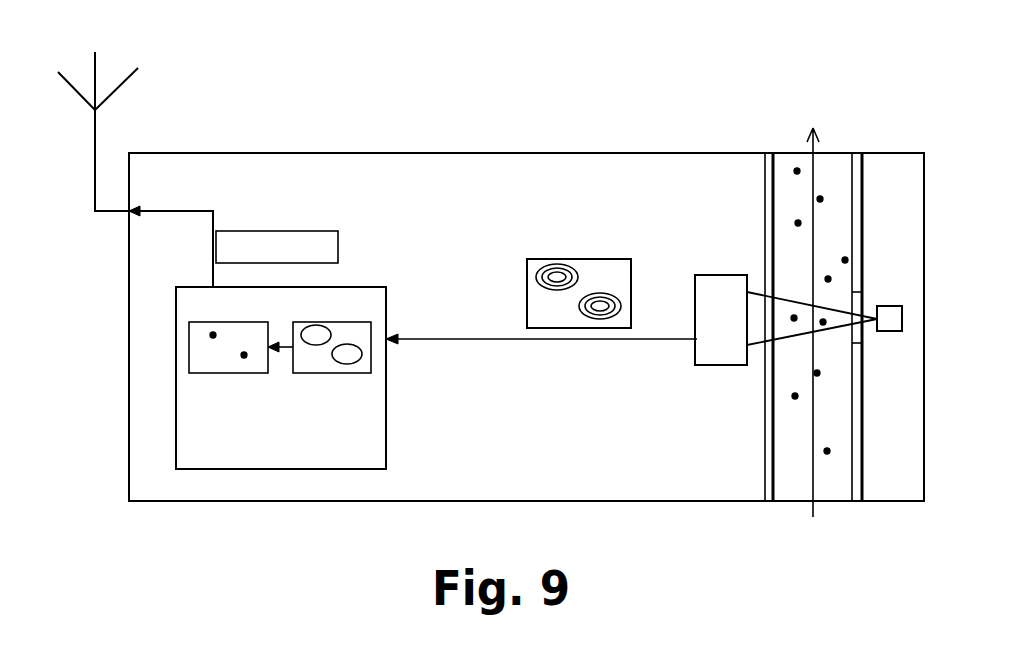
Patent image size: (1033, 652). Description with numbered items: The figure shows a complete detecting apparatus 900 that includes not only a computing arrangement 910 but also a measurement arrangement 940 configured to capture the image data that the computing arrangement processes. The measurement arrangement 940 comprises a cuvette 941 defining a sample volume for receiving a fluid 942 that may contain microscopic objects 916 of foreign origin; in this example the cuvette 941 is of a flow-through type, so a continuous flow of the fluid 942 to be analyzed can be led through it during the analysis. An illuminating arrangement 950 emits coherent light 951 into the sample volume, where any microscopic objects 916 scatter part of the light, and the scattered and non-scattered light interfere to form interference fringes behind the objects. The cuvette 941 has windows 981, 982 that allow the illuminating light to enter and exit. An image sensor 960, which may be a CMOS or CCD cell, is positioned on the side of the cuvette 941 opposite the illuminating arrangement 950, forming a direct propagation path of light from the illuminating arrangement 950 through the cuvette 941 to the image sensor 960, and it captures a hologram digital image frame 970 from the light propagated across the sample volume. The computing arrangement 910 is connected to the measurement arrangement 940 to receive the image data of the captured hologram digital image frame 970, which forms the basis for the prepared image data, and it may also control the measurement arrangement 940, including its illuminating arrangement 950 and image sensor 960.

The detecting apparatus 900 is at (518, 130).
The computing arrangement 910 is at (360, 273).
The microscopic objects 916 is at (827, 454).
The measurement arrangement 940 is at (706, 214).
The cuvette 941 is at (863, 175).
The fluid 942 is at (797, 195).
The illuminating arrangement 950 is at (906, 342).
The coherent light 951 is at (830, 340).
The image sensor 960 is at (738, 274).
The hologram digital image frame 970 is at (587, 258).
The window 981 is at (865, 300).
The window 982 is at (769, 347).